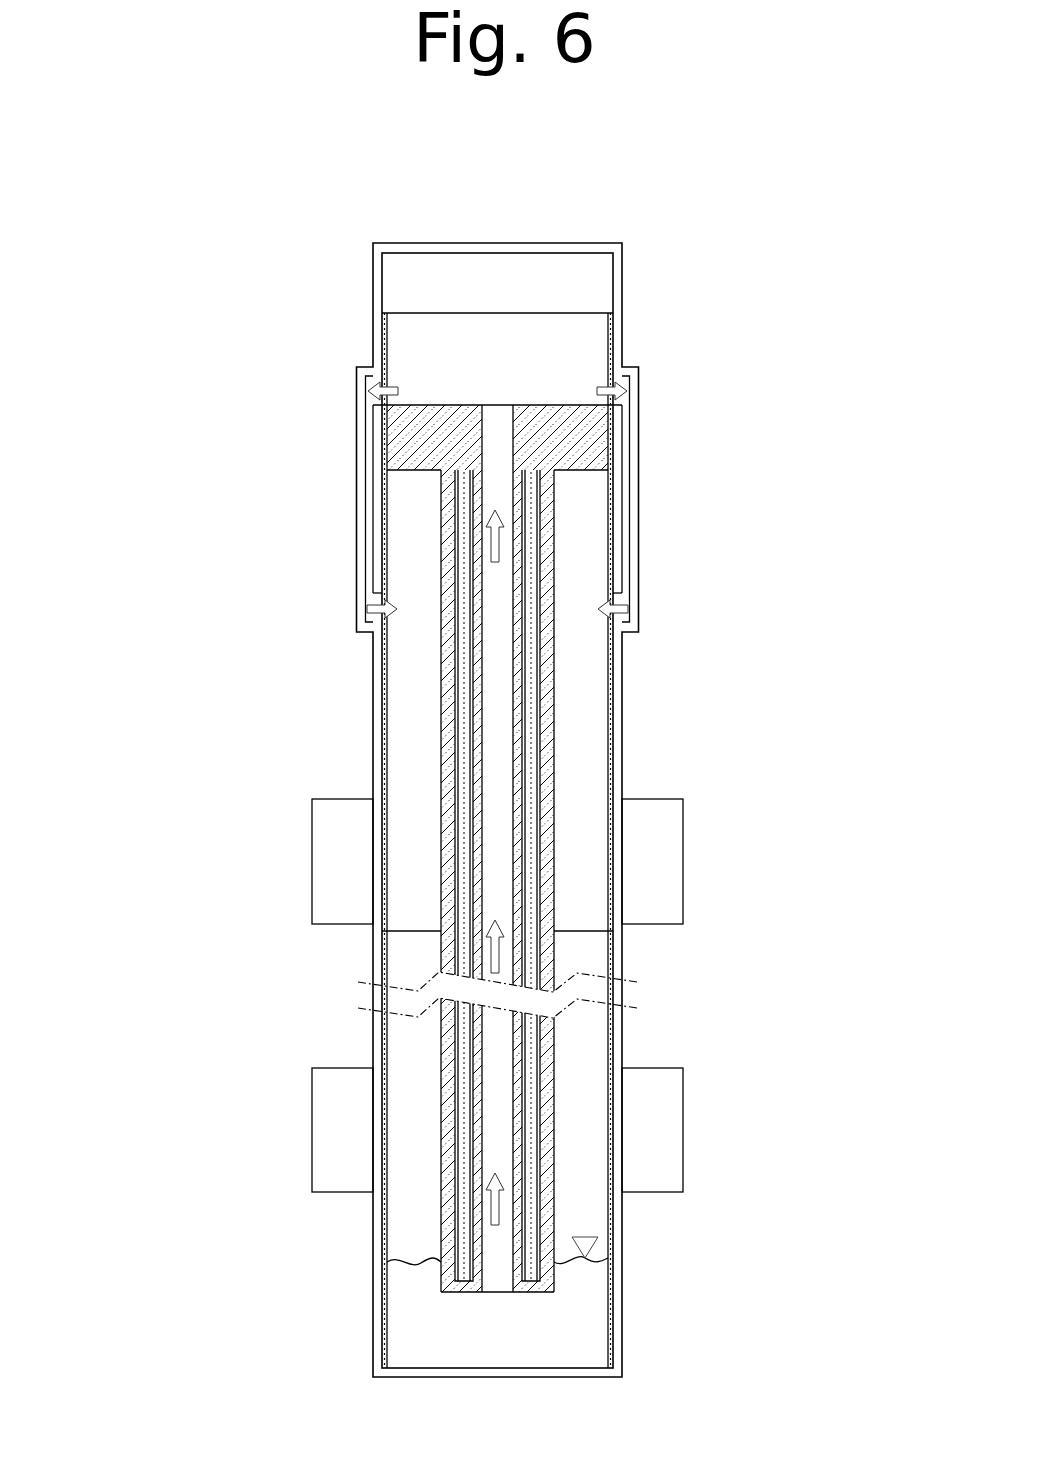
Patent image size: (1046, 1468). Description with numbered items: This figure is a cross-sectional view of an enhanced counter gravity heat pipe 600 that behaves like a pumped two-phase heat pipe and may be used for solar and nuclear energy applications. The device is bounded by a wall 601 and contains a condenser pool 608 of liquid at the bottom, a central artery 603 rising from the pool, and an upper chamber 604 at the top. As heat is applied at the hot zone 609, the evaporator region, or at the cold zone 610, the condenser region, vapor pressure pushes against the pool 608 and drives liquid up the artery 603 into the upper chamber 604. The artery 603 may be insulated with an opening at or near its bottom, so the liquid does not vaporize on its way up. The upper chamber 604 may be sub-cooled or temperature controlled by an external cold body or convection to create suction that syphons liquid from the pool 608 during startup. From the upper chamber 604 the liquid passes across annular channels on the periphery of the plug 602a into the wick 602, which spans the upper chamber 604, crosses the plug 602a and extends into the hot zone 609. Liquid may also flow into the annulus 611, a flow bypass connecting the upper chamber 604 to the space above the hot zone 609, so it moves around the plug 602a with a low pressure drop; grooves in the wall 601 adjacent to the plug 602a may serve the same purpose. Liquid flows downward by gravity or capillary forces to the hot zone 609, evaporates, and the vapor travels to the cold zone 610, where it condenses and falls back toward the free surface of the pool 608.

The enhanced counter gravity heat pipe 600 is at (172, 193).
The wall 601 is at (380, 244).
The wick 602 is at (382, 697).
The plug 602a is at (410, 444).
The artery 603 is at (543, 747).
The upper chamber 604 is at (552, 278).
The condenser pool 608 is at (577, 1314).
The hot zone 609 is at (345, 848).
The cold zone 610 is at (332, 1134).
The annulus 611 is at (628, 492).